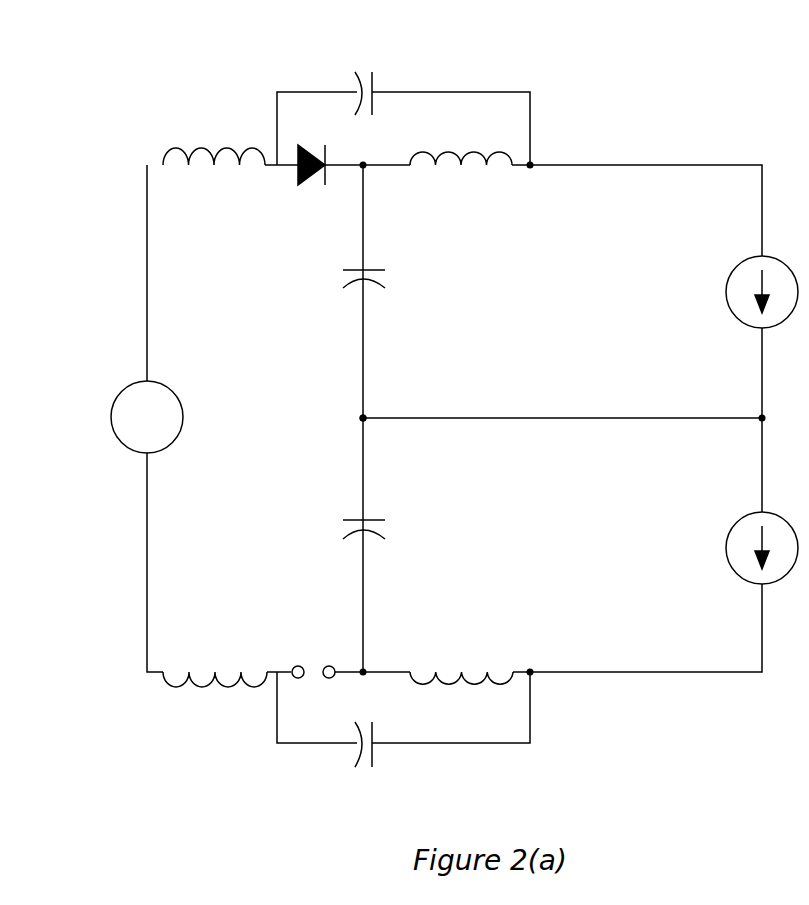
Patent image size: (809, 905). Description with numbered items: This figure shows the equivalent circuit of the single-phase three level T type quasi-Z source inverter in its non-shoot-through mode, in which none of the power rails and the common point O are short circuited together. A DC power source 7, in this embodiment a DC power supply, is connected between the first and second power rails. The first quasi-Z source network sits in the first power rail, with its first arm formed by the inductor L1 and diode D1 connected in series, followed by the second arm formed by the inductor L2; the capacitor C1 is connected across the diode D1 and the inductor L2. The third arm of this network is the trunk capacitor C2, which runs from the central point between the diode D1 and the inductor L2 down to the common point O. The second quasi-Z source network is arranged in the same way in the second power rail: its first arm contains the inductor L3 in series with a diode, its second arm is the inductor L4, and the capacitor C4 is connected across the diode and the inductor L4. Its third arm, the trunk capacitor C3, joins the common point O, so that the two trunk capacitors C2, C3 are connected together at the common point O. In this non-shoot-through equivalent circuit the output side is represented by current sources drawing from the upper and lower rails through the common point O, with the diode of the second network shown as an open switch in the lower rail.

The DC power source 7 is at (147, 417).
The inductor L1 is at (214, 191).
The diode D1 is at (311, 189).
The inductor L2 is at (461, 193).
The capacitor C1 is at (403, 99).
The trunk capacitor C2 is at (334, 284).
The trunk capacitor C3 is at (334, 538).
The capacitor C4 is at (403, 741).
The inductor L3 is at (215, 658).
The inductor L4 is at (461, 657).
The common point O is at (343, 419).